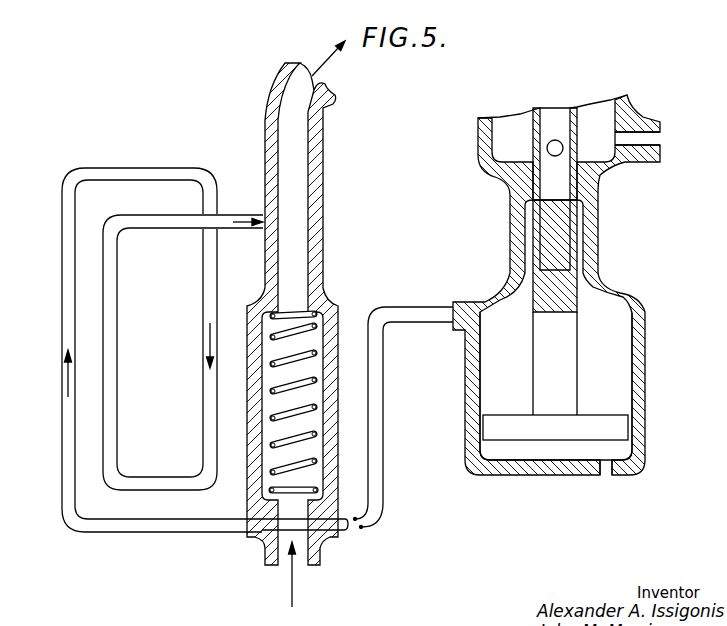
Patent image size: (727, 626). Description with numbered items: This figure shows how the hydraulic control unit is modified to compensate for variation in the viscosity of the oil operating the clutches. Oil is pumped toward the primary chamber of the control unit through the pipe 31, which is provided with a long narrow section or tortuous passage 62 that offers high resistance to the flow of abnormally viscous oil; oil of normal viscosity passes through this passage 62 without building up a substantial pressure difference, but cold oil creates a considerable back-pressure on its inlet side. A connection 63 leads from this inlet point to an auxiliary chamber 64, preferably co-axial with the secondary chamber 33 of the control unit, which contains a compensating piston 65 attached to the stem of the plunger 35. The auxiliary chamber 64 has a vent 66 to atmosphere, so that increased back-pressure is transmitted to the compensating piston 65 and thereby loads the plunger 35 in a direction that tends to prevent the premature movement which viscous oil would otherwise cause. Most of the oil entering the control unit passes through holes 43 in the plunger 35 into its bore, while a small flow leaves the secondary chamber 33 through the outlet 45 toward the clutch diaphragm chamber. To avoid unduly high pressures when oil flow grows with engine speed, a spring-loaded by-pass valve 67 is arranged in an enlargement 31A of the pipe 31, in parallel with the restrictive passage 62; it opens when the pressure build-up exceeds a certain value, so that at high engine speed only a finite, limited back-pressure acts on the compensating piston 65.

The pipe 31 is at (276, 104).
The enlargement of the pipe 31A is at (330, 333).
The secondary chamber 33 is at (607, 113).
The plunger 35 is at (545, 298).
The holes in the plunger 43 is at (535, 147).
The outlet 45 is at (647, 140).
The restrictive passage 62 is at (68, 332).
The connection 63 is at (373, 519).
The auxiliary chamber 64 is at (503, 383).
The compensating piston 65 is at (597, 430).
The vent 66 is at (600, 472).
The by-pass valve 67 is at (312, 485).